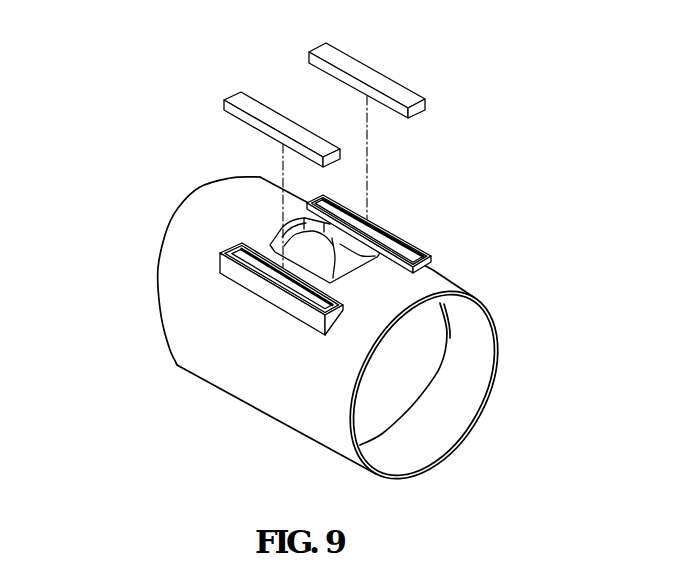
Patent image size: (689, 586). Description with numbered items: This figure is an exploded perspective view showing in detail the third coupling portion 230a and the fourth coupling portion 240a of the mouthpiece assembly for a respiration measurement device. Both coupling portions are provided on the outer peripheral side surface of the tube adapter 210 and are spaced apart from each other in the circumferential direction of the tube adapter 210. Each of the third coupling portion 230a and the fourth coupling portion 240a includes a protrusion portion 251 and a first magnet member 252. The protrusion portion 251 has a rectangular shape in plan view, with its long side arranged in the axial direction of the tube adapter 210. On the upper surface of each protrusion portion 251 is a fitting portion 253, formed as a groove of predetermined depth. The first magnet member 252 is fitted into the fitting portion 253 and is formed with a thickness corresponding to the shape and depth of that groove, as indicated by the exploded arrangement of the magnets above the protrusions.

The tube adapter 210 is at (240, 408).
The third coupling portion 230a is at (305, 333).
The fourth coupling portion 240a is at (441, 257).
The protrusion portion 251 is at (329, 294).
The first magnet member 252 is at (323, 52).
The fitting portion 253 is at (220, 265).